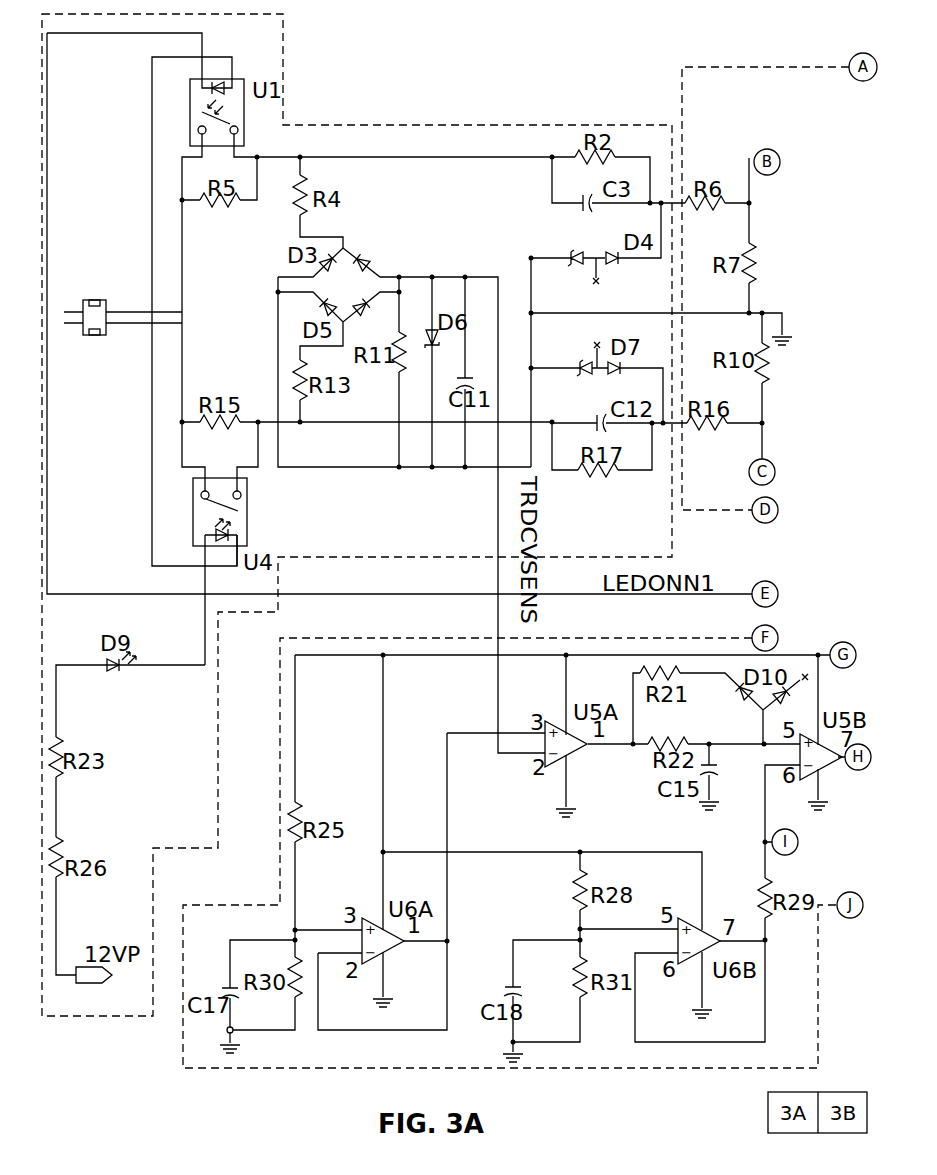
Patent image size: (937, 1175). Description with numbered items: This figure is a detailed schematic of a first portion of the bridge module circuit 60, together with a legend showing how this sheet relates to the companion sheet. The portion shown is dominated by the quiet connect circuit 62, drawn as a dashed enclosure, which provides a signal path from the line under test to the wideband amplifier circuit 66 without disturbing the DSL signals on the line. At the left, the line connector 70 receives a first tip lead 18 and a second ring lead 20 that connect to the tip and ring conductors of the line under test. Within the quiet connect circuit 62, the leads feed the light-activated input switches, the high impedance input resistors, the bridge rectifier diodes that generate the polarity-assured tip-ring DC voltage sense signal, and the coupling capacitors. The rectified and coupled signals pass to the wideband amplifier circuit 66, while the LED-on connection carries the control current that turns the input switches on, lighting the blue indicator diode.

The lead 18 is at (68, 310).
The lead 20 is at (74, 326).
The line connector 70 is at (107, 328).
The quiet connect circuit 62 is at (283, 43).
The wideband amplifier circuit 66 is at (812, 66).
The bridge module circuit 60 is at (648, 1079).